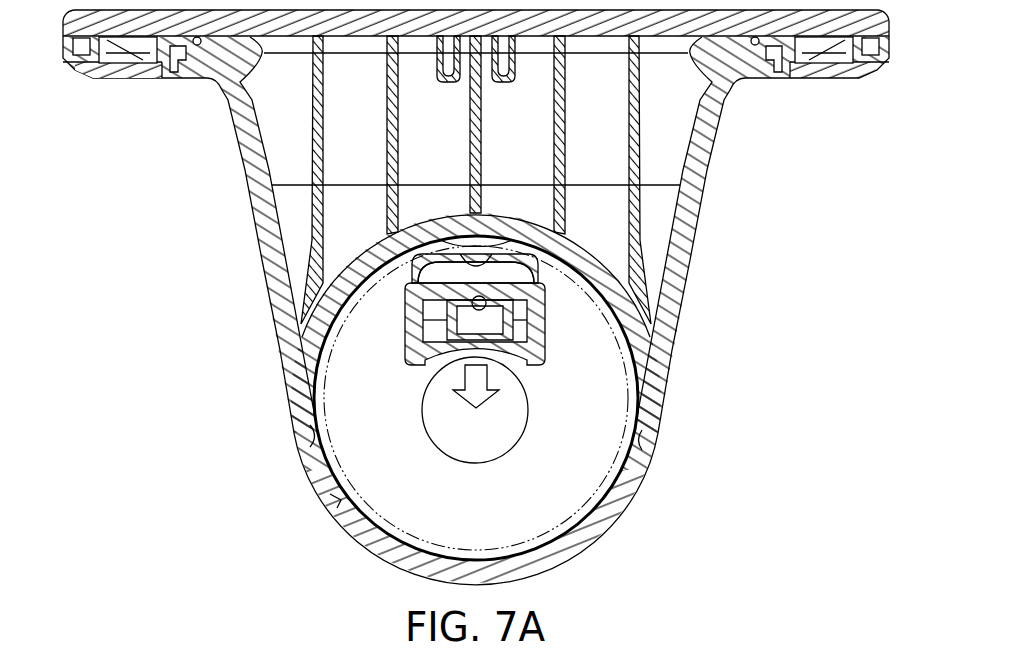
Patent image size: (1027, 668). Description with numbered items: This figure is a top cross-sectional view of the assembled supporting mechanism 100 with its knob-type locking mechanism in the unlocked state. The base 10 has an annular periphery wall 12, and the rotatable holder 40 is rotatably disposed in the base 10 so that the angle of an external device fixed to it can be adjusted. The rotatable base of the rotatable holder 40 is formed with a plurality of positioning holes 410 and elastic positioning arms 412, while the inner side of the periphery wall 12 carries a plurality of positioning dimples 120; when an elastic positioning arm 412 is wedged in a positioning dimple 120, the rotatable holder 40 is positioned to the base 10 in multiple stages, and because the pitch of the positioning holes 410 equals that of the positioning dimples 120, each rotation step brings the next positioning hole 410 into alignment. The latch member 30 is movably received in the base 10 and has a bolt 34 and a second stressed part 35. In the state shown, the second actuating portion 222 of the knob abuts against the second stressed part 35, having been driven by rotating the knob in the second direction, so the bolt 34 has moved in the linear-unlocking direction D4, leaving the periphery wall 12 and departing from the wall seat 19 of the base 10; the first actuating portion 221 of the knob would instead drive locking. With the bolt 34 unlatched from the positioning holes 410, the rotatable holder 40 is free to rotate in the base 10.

The supporting mechanism 100 is at (482, 297).
The base 10 is at (711, 231).
The periphery wall 12 is at (297, 378).
The wall seat 19 is at (141, 80).
The latch member 30 is at (560, 329).
The bolt 34 is at (498, 238).
The second stressed part 35 is at (523, 389).
The rotatable holder 40 is at (653, 445).
The positioning dimple 120 is at (305, 436).
The first actuating portion 221 is at (497, 292).
The second actuating portion 222 is at (512, 302).
The positioning hole 410 is at (497, 244).
The elastic positioning arm 412 is at (330, 502).
The linear-unlocking direction D4 is at (476, 408).